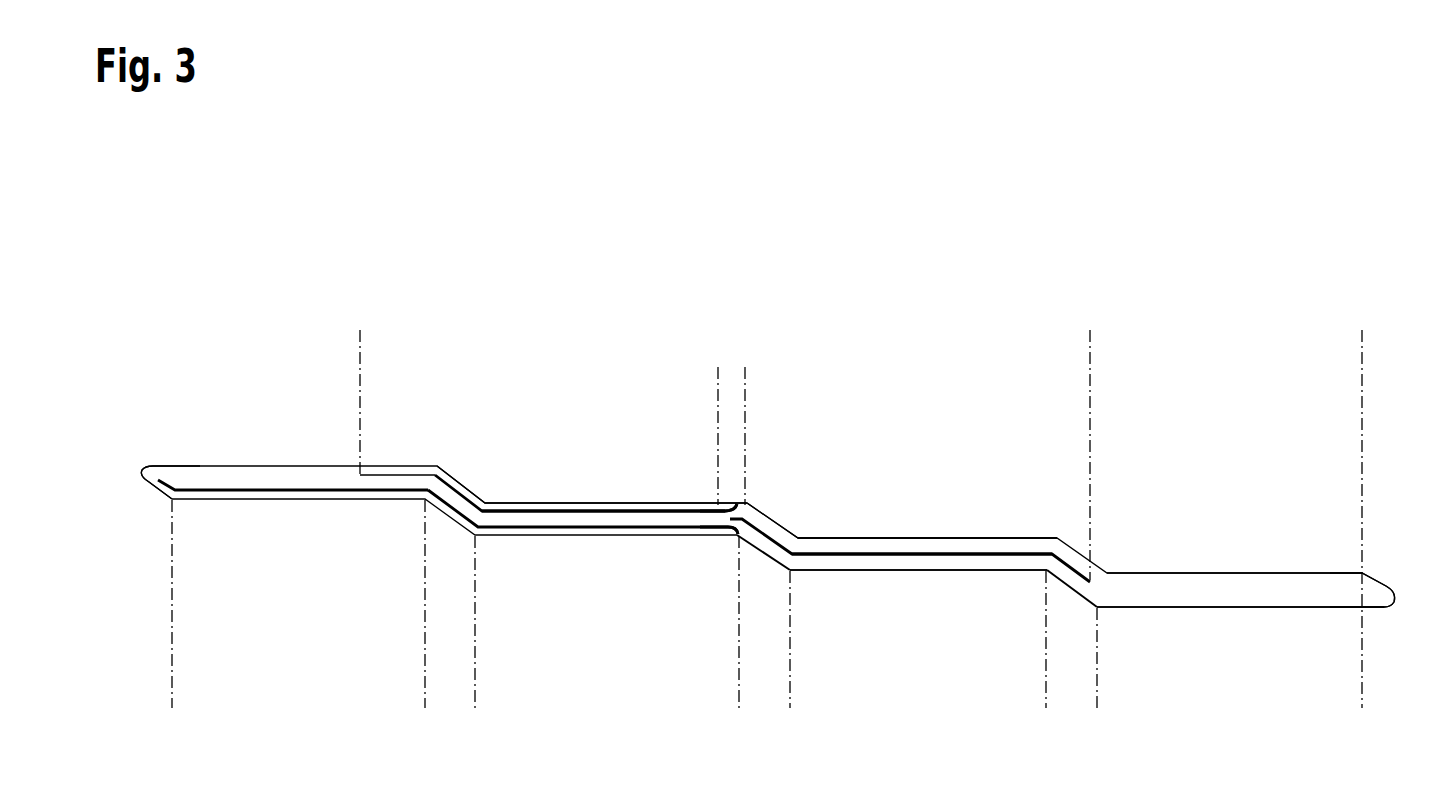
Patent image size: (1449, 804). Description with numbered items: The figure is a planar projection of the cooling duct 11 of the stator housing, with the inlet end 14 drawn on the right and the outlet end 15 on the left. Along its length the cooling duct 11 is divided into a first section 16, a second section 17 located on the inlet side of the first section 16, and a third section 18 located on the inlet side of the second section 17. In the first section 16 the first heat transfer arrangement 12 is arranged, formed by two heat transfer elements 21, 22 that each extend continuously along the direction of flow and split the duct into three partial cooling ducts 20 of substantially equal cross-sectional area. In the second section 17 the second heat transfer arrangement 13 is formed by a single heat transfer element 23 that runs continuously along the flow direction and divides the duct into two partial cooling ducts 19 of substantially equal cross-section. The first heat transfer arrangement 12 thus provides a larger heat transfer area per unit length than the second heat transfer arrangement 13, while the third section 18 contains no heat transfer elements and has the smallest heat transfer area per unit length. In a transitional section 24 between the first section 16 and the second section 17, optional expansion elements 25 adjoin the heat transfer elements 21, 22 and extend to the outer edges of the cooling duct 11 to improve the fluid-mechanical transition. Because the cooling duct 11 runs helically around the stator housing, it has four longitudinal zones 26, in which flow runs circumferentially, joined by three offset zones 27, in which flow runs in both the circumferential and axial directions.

The cooling duct 11 is at (1158, 555).
The first heat transfer arrangement 12 is at (558, 511).
The second heat transfer arrangement 13 is at (959, 538).
The inlet end 14 is at (1385, 555).
The outlet end 15 is at (168, 440).
The first section 16 is at (510, 340).
The second section 17 is at (895, 340).
The third section 18 is at (1238, 338).
The partial cooling ducts 19 is at (640, 511).
The partial cooling ducts 20 is at (1005, 550).
The heat transfer element 21 is at (386, 492).
The heat transfer element 22 is at (420, 475).
The heat transfer element 23 is at (875, 553).
The transitional section 24 is at (733, 385).
The expansion elements 25 is at (733, 503).
The longitudinal zones 26 is at (300, 628).
The offset zones 27 is at (452, 677).